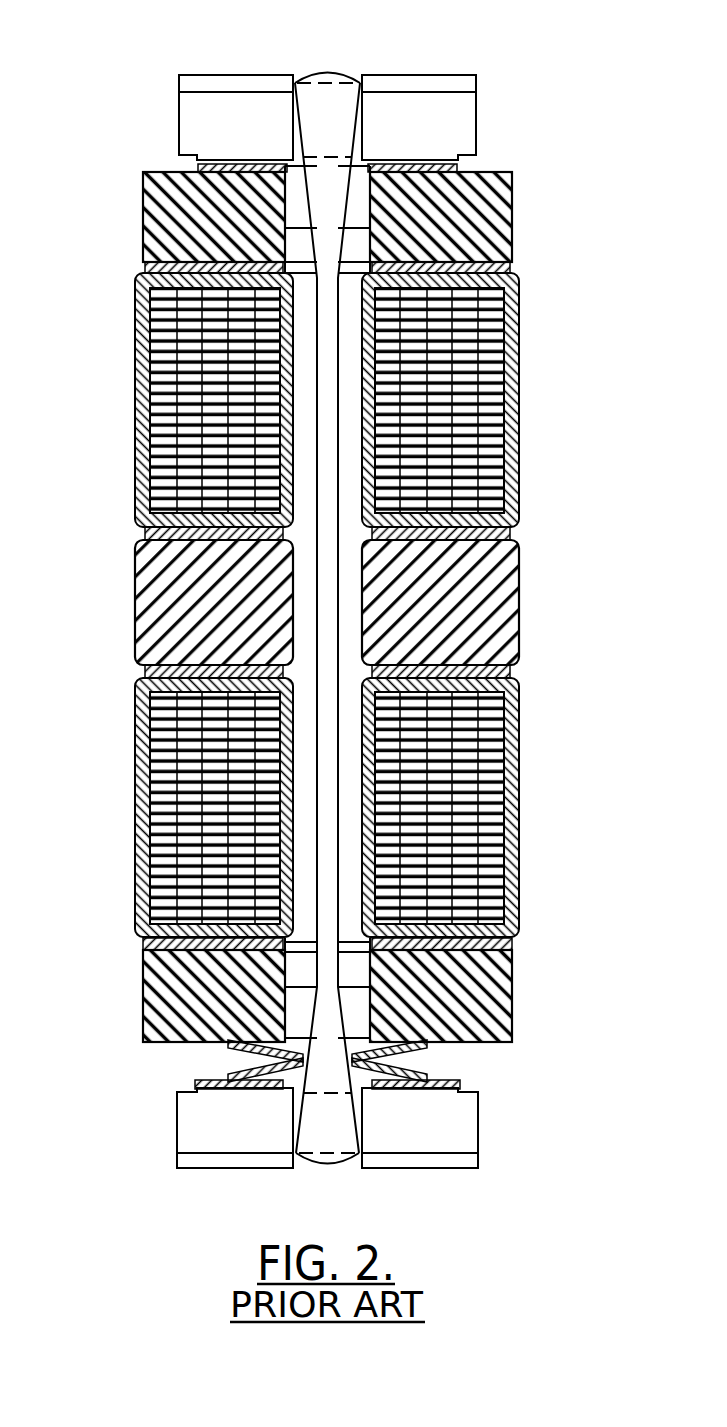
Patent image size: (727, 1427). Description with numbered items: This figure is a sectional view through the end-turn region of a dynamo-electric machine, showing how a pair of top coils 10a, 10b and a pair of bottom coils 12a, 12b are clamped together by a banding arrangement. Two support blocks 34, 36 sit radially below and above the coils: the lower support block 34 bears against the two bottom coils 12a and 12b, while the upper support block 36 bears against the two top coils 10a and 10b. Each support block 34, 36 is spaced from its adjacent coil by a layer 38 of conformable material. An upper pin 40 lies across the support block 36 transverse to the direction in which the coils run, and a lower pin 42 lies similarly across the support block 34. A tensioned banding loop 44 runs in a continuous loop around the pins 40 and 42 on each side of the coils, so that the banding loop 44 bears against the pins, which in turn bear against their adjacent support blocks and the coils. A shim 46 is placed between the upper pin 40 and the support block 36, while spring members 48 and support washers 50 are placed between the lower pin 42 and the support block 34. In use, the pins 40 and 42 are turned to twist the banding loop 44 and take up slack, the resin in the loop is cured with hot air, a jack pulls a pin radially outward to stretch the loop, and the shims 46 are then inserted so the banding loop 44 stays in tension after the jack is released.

The top coil 10a is at (517, 400).
The top coil 10b is at (137, 460).
The bottom coil 12a is at (497, 784).
The bottom coil 12b is at (160, 788).
The support block 34 is at (490, 930).
The support block 36 is at (472, 242).
The layer of conformable material 38 is at (141, 218).
The upper pin 40 is at (188, 105).
The lower pin 42 is at (200, 1127).
The banding loop 44 is at (330, 617).
The shim 46 is at (467, 163).
The spring member 48 is at (407, 1047).
The support washer 50 is at (197, 1082).